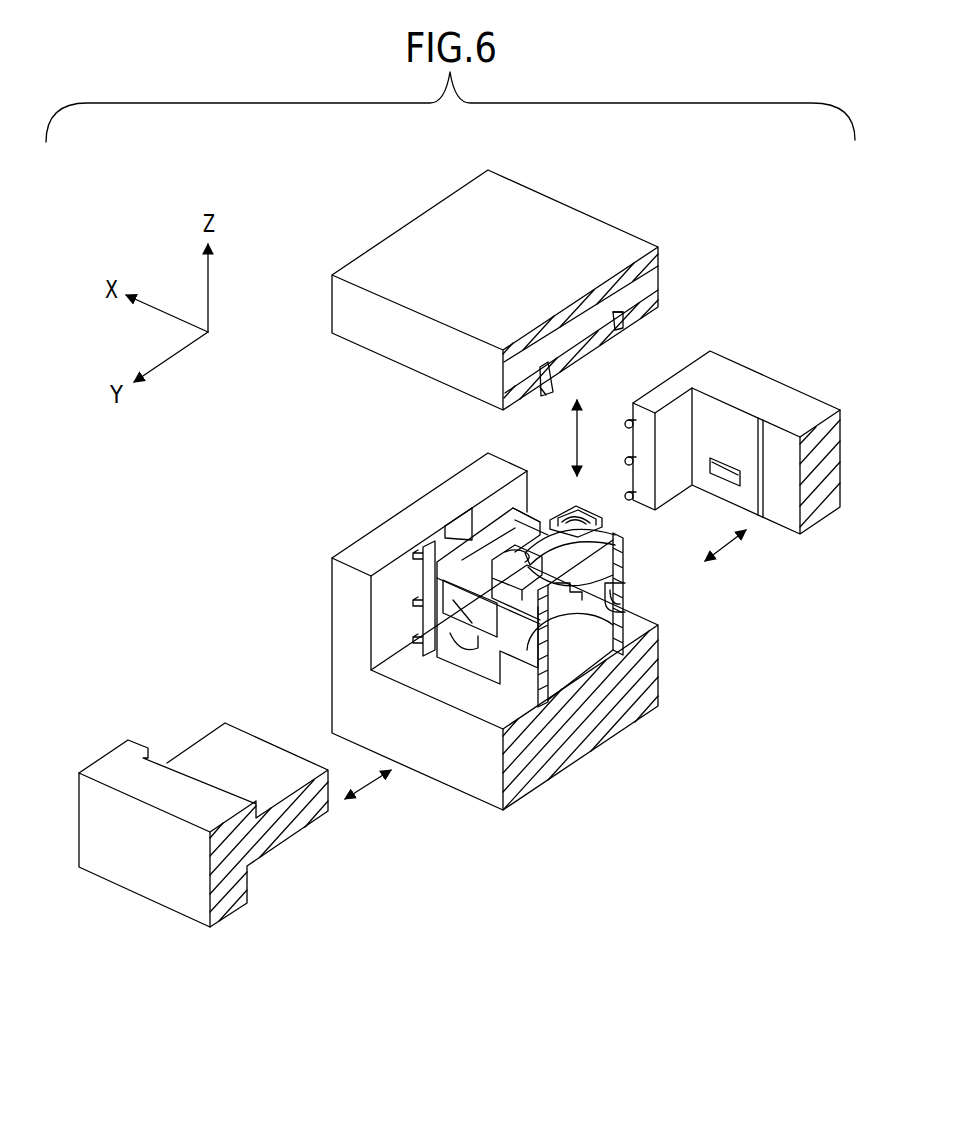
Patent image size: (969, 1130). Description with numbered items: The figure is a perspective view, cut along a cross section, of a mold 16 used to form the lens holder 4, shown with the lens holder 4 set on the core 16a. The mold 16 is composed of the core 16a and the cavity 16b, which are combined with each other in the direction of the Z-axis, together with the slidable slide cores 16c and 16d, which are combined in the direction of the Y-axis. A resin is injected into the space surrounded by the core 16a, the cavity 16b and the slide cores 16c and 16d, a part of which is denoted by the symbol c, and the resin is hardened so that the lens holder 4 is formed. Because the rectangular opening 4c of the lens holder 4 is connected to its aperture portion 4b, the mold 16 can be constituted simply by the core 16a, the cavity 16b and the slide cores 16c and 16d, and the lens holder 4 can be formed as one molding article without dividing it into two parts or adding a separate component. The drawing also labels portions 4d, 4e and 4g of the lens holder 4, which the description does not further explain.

The mold 16 is at (670, 203).
The core 16a is at (466, 768).
The cavity 16b is at (555, 215).
The slide core 16c is at (150, 862).
The slide core 16d is at (790, 403).
The space c is at (620, 324).
The lens holder 4 is at (485, 569).
The aperture portion 4b is at (622, 585).
The opening 4c is at (470, 640).
The lens portion 4d is at (622, 607).
The projections 4e is at (418, 638).
The projection 4g is at (455, 528).